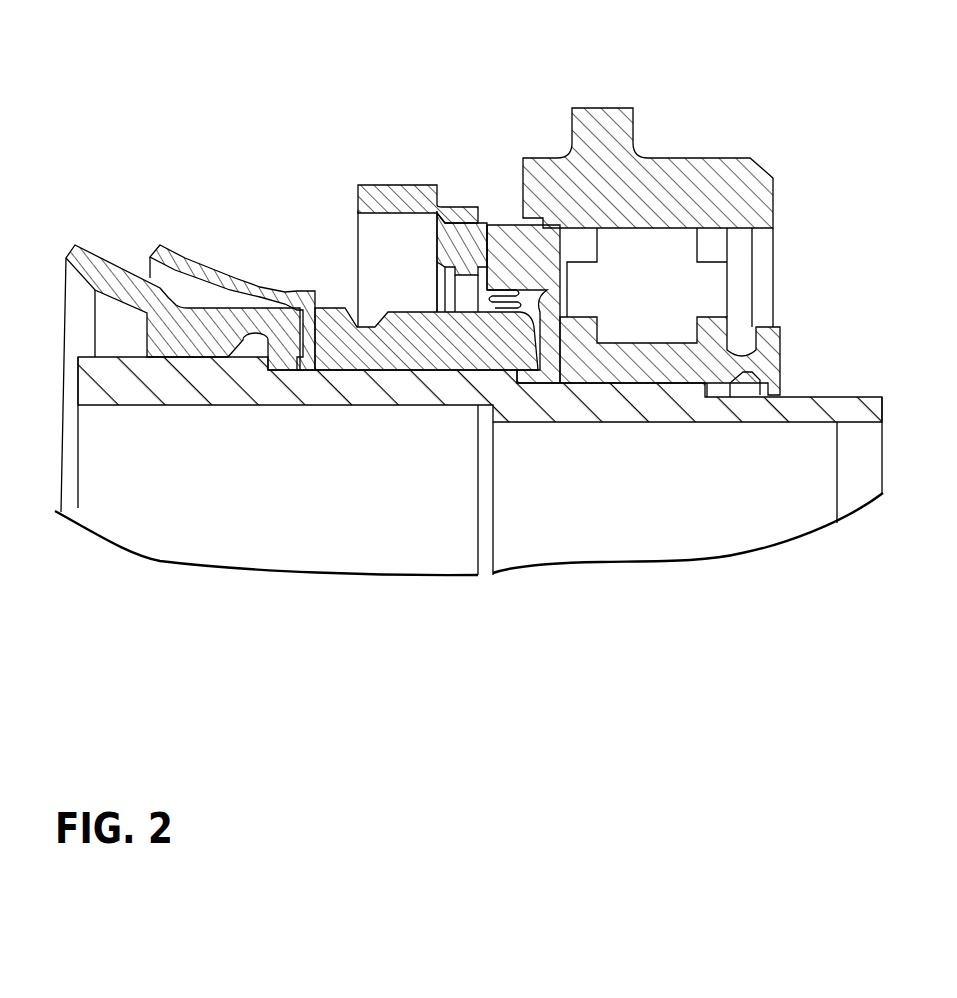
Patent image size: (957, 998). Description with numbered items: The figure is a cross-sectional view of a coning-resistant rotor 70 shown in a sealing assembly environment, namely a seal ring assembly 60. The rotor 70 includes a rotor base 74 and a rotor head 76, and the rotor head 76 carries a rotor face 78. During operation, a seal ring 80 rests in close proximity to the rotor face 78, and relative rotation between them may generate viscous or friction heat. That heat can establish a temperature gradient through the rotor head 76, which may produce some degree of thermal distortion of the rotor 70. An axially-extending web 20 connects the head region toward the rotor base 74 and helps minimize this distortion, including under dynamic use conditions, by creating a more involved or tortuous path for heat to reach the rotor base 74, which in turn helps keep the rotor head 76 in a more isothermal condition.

The seal ring assembly 60 is at (378, 98).
The seal ring 80 is at (437, 238).
The rotor head 76 is at (497, 225).
The rotor face 78 is at (510, 225).
The coning-resistant rotor 70 is at (560, 230).
The axially-extending web 20 is at (564, 297).
The rotor base 74 is at (617, 347).